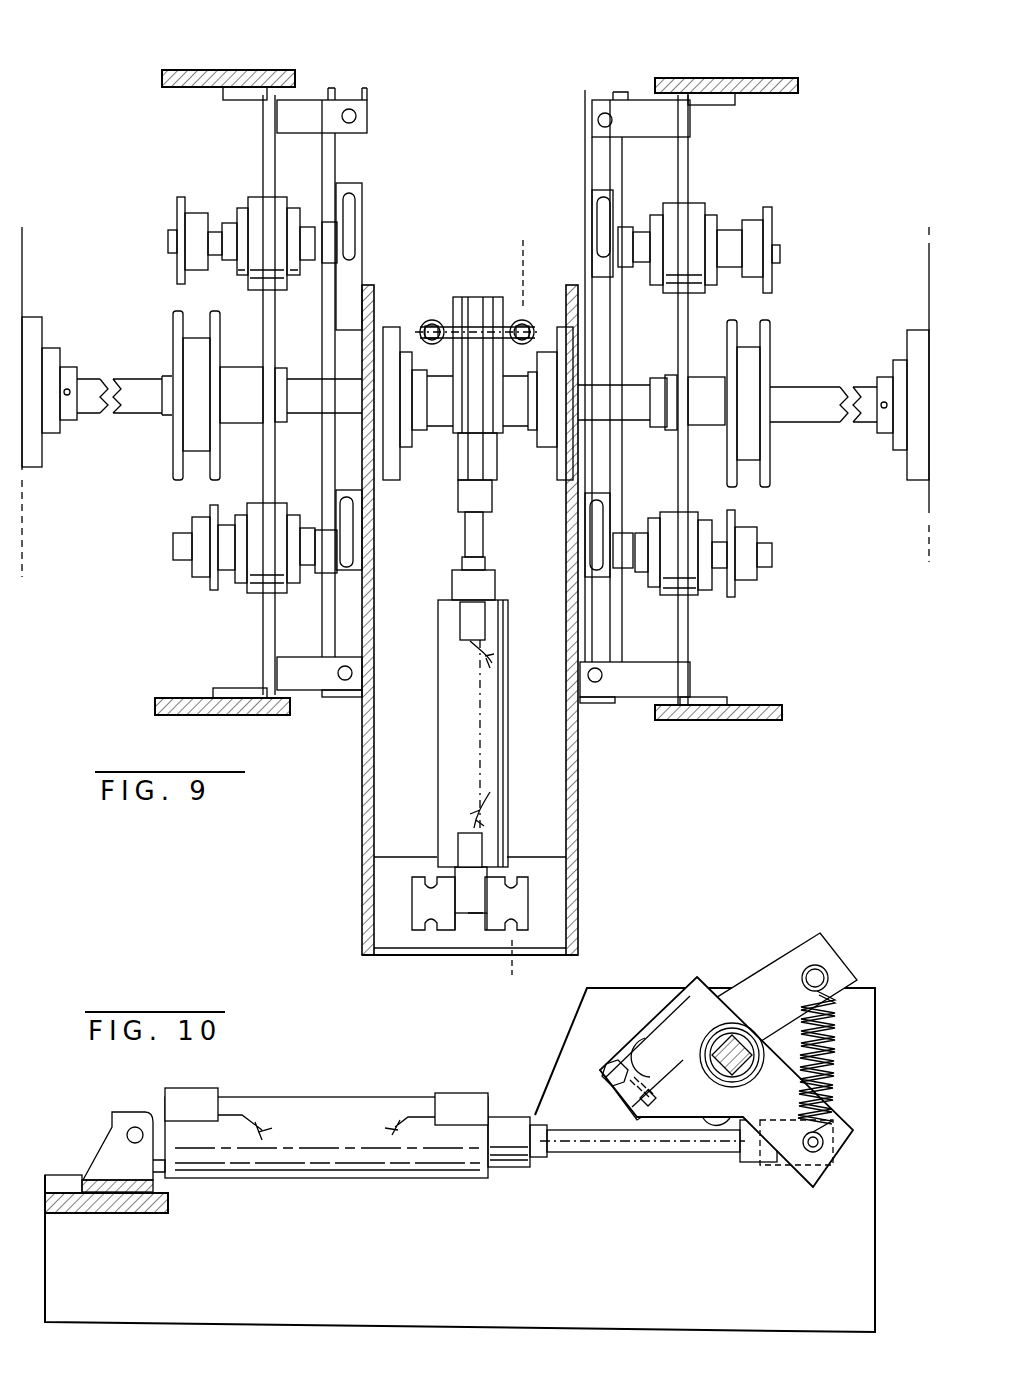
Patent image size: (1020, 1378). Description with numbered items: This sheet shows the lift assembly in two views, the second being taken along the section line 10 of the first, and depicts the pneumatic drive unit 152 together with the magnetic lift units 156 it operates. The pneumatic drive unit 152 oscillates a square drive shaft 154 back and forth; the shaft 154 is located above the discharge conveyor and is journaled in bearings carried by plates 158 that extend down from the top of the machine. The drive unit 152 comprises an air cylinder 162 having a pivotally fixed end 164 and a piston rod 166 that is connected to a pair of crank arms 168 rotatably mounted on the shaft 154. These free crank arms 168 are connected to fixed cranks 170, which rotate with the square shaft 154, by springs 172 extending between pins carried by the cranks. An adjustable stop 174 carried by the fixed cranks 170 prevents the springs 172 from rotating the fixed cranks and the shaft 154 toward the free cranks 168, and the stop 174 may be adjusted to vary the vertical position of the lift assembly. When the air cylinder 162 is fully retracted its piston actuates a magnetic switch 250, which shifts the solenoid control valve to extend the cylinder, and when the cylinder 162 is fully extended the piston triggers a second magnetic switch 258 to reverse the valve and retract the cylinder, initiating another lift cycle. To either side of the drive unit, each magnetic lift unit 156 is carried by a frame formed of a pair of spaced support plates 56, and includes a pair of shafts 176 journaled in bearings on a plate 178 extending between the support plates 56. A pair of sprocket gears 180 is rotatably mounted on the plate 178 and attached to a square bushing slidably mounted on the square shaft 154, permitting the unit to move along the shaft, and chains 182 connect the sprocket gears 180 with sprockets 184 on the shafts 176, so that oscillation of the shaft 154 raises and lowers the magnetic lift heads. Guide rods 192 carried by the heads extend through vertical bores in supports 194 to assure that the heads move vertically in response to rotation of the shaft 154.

In FIG. 9, the section line 10— 10 is at (523, 237).
In FIG. 9, the support plates 56 is at (235, 72).
In FIG. 9, the pneumatic drive unit 152 is at (534, 816).
In FIG. 10, the pneumatic drive unit 152 is at (282, 1062).
In FIG. 9, the square drive shaft 154 is at (820, 392).
In FIG. 10, the square drive shaft 154 is at (732, 1040).
In FIG. 9, the magnetic lift units 156 is at (146, 218).
In FIG. 9, the plates 158 is at (362, 872).
In FIG. 10, the plates 158 is at (190, 1310).
In FIG. 9, the air cylinder 162 is at (490, 728).
In FIG. 10, the air cylinder 162 is at (320, 1100).
In FIG. 9, the pivotally fixed end 164 is at (443, 910).
In FIG. 10, the pivotally fixed end 164 is at (120, 1138).
In FIG. 9, the piston rod 166 is at (480, 525).
In FIG. 10, the piston rod 166 is at (575, 1152).
In FIG. 9, the crank arms 168 is at (450, 305).
In FIG. 10, the crank arms 168 is at (790, 1112).
In FIG. 9, the fixed cranks 170 is at (480, 305).
In FIG. 10, the fixed cranks 170 is at (802, 955).
In FIG. 9, the springs 172 is at (424, 324).
In FIG. 10, the springs 172 is at (838, 1060).
In FIG. 10, the adjustable stop 174 is at (622, 1088).
In FIG. 9, the shafts 176 is at (175, 545).
In FIG. 9, the plate 178 is at (263, 632).
In FIG. 9, the sprocket gears 180 is at (212, 470).
In FIG. 9, the chains 182 is at (178, 297).
In FIG. 9, the sprockets 184 is at (186, 200).
In FIG. 9, the guide rods 192 is at (352, 116).
In FIG. 9, the supports 194 is at (308, 100).
In FIG. 9, the magnetic switch 250 is at (462, 846).
In FIG. 10, the magnetic switch 250 is at (200, 1090).
In FIG. 9, the magnetic switch 258 is at (464, 618).
In FIG. 10, the magnetic switch 258 is at (455, 1095).